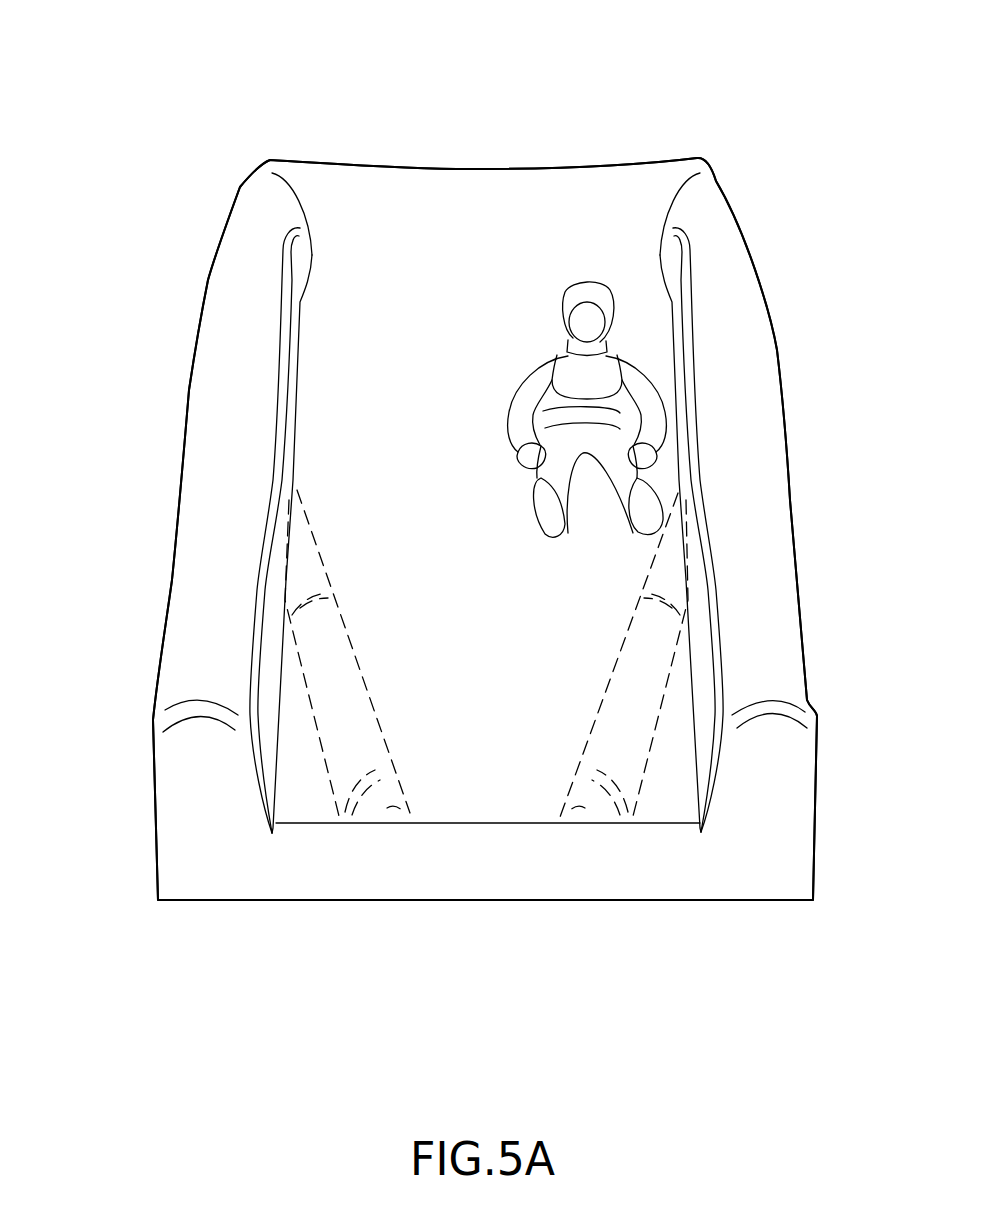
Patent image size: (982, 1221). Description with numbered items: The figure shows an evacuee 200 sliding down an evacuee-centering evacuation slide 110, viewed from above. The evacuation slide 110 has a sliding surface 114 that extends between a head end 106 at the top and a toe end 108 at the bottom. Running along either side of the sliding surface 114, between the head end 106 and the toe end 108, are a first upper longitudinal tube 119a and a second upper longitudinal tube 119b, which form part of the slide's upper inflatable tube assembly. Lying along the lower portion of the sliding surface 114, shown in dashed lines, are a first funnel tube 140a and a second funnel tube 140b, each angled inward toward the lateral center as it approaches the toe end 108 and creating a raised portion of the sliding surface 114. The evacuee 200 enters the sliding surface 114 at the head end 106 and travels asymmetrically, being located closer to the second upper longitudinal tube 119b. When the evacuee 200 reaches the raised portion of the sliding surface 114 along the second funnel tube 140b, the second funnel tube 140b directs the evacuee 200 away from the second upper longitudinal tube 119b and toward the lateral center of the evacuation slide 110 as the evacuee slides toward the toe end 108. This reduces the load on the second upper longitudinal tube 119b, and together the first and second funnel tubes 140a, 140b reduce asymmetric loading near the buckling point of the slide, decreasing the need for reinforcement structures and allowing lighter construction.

The evacuation slide 110 is at (210, 96).
The head end 106 is at (417, 163).
The evacuee 200 is at (583, 278).
The first upper longitudinal tube 119a is at (207, 347).
The second upper longitudinal tube 119b is at (747, 403).
The sliding surface 114 is at (444, 394).
The first funnel tube 140a is at (328, 703).
The second funnel tube 140b is at (635, 710).
The toe end 108 is at (417, 853).